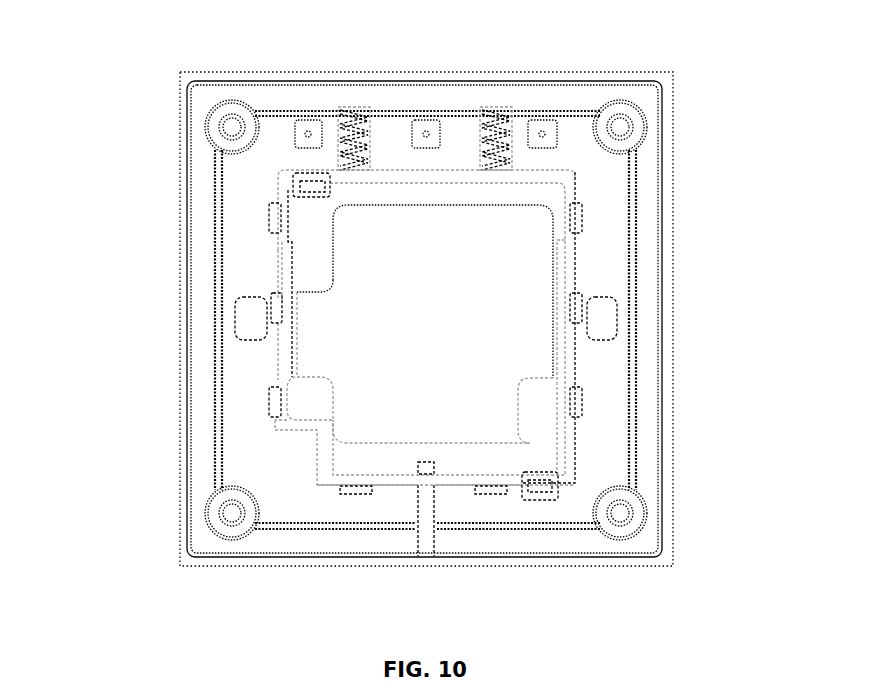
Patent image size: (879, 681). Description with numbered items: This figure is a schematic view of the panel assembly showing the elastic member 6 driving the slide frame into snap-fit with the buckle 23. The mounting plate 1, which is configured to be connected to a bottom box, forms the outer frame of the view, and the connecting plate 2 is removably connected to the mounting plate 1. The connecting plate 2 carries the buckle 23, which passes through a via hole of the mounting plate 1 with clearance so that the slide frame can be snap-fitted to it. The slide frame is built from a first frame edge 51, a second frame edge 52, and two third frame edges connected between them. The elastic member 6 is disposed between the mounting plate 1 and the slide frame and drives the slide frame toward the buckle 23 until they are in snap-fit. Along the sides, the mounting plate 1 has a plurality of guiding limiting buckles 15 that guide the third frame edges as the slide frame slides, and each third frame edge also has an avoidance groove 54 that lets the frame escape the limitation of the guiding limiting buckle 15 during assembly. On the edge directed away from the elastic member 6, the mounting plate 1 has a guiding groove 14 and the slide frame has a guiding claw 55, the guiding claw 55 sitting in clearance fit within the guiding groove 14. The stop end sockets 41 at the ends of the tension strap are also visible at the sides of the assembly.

The mounting plate 1 is at (192, 104).
The connecting plate 2 is at (176, 569).
The elastic member 6 is at (348, 124).
The first frame edge 51 is at (537, 183).
The buckle 23 is at (313, 183).
The guiding limiting buckle 15 is at (270, 218).
The avoidance groove 54 is at (277, 267).
The stop end socket 41 is at (245, 329).
The second frame edge 52 is at (335, 482).
The guiding claw 55 is at (422, 505).
The guiding groove 14 is at (424, 540).